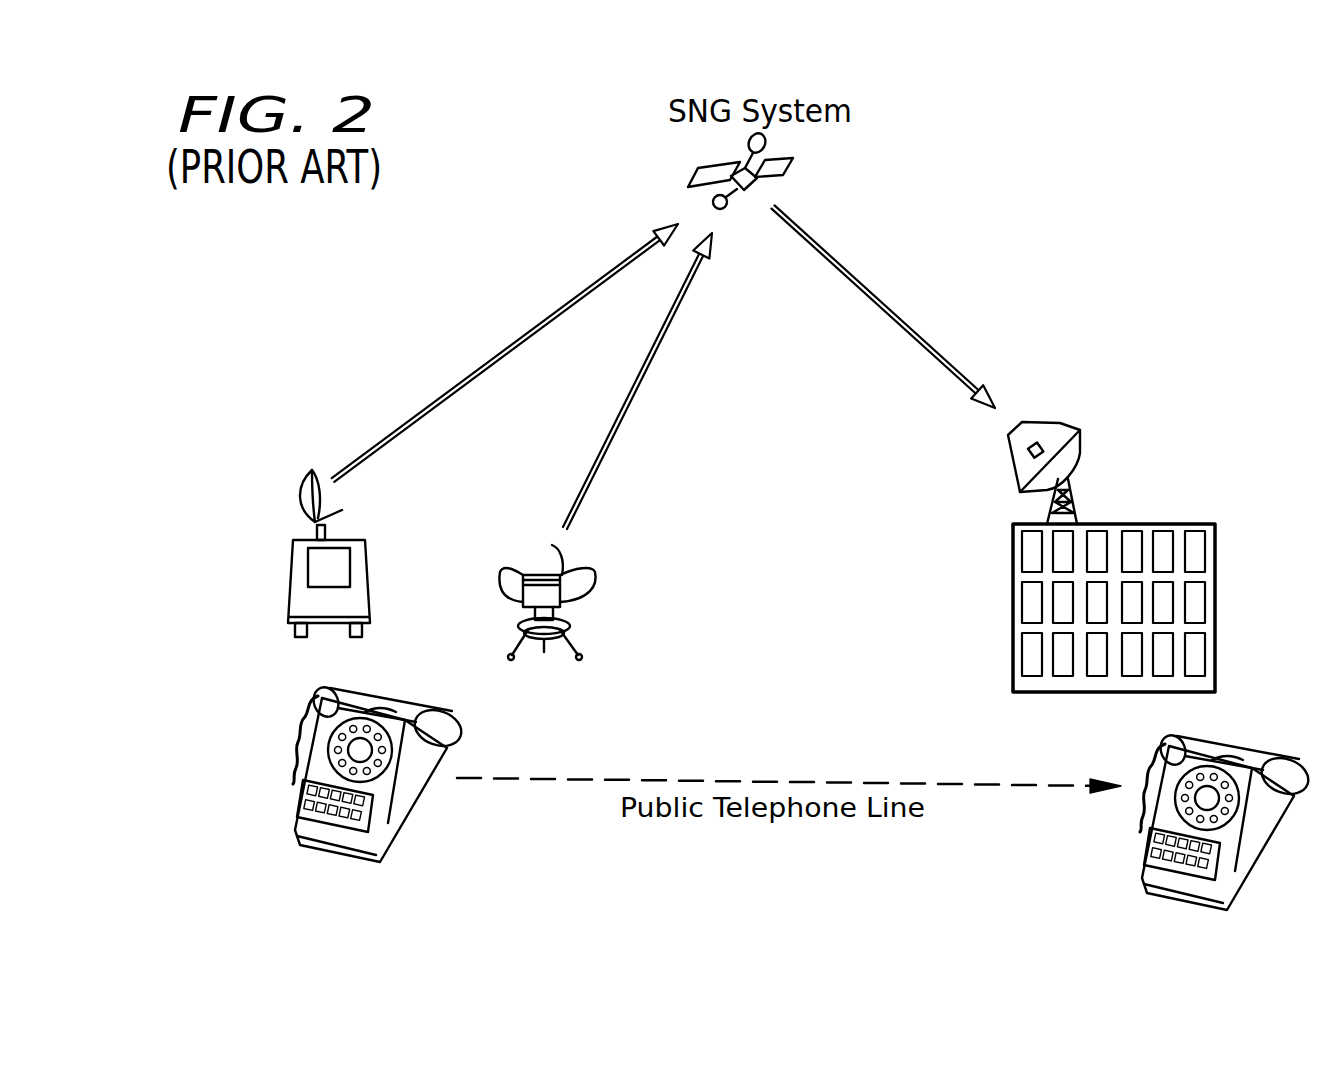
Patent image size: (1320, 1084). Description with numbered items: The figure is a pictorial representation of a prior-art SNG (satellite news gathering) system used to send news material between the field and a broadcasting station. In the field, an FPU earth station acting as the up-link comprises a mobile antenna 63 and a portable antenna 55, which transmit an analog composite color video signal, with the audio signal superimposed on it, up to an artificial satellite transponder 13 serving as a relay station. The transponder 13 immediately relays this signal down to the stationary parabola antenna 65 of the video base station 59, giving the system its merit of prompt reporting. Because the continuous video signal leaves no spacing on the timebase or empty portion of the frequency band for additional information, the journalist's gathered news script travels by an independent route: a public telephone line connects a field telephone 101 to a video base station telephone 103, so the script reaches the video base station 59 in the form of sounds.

The artificial satellite transponder 13 is at (785, 143).
The mobile antenna 63 is at (346, 507).
The portable antenna 55 is at (590, 606).
The stationary parabola antenna 65 is at (1083, 458).
The video base station 59 is at (1215, 646).
The field telephone 101 is at (415, 798).
The video base station telephone 103 is at (1193, 893).